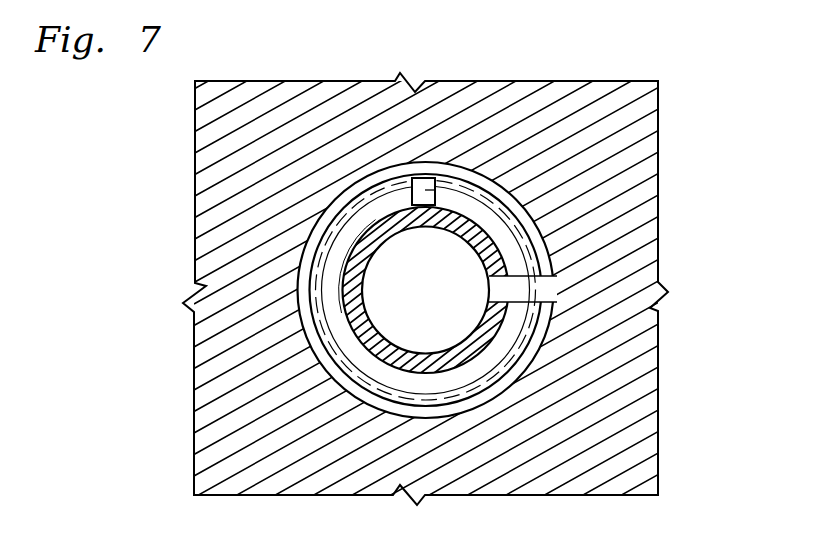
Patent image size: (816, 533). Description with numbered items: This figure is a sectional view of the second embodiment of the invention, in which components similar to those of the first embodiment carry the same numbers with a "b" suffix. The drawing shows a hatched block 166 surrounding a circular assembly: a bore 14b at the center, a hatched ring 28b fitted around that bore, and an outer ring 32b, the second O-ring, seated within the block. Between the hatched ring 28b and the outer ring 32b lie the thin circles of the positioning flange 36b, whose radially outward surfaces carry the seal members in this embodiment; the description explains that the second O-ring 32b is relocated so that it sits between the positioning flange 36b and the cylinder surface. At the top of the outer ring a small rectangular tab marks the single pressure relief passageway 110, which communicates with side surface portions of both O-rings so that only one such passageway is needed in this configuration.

The housing block 166 is at (644, 125).
The second O-ring 32b is at (513, 207).
The bearing ring 28b is at (547, 274).
The positioning flange 36b is at (500, 352).
The shaft bore 14b is at (492, 300).
The pressure relief passageway 110 is at (453, 167).